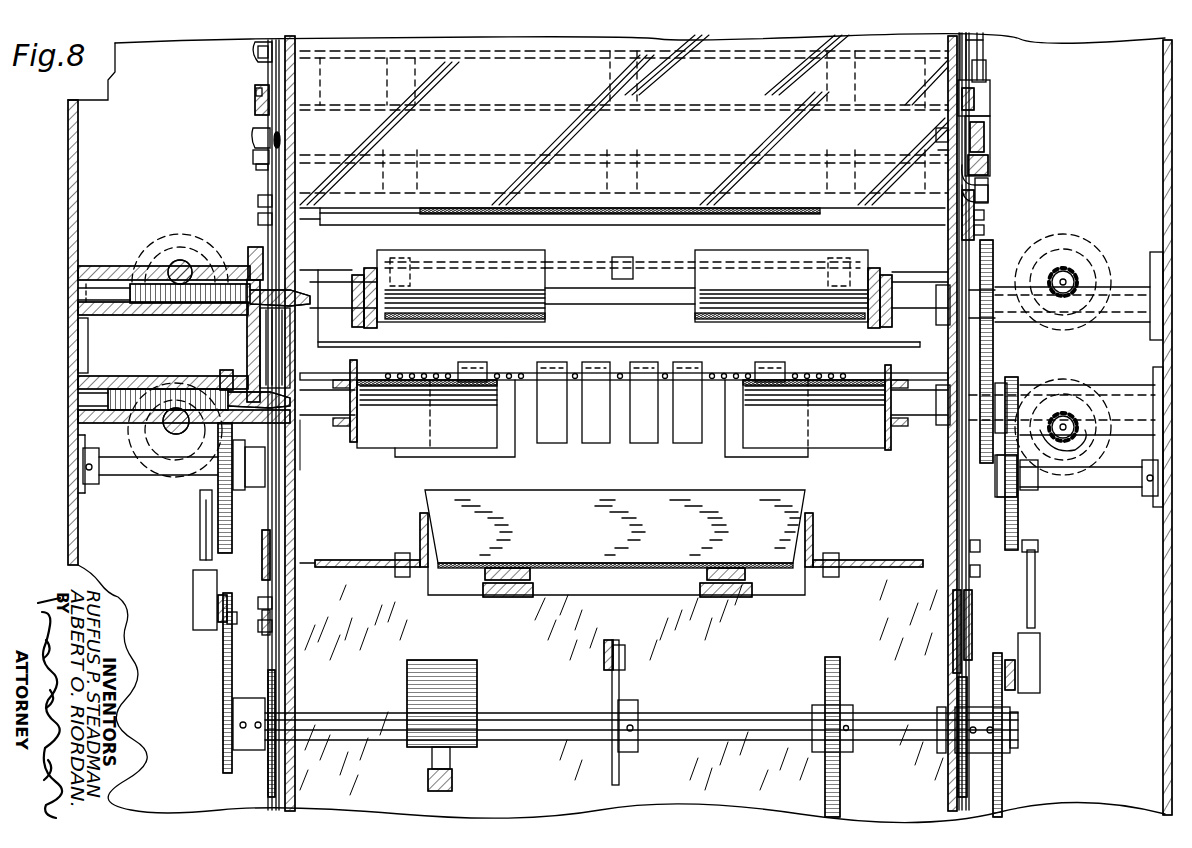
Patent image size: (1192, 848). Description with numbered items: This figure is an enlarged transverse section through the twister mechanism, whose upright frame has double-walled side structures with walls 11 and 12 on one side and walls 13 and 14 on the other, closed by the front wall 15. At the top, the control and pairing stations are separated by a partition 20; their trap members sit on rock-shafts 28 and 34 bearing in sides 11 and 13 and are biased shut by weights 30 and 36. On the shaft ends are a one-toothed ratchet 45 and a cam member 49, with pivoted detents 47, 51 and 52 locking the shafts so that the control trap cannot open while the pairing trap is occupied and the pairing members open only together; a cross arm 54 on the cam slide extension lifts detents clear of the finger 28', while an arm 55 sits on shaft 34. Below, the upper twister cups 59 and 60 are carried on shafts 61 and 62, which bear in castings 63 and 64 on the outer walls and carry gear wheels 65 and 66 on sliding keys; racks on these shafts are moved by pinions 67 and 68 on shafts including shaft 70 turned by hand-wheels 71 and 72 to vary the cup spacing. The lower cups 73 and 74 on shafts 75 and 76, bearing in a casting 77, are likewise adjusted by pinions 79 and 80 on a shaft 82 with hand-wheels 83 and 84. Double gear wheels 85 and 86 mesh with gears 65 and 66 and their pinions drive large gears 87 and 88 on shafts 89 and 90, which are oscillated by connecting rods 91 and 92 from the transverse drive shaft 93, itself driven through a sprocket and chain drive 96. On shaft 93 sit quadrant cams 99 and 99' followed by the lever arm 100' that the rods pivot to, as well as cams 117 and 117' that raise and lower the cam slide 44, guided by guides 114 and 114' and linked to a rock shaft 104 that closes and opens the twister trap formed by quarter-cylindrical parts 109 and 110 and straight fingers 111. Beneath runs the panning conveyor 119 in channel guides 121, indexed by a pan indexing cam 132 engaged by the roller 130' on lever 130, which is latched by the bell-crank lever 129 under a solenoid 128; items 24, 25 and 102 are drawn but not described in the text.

The side wall 11 is at (936, 133).
The side wall 12 is at (1163, 127).
The side wall 13 is at (295, 128).
The side wall 14 is at (78, 152).
The front wall 15 is at (268, 62).
The partition 20 is at (340, 220).
The bracket plate 24 is at (966, 52).
The bracket 25 is at (990, 92).
The rock-shaft 28 is at (624, 80).
The finger 28' is at (216, 95).
The weight 30 is at (255, 45).
The rock-shaft 34 is at (565, 150).
The weight 36 is at (253, 158).
The cam slide 44 is at (948, 198).
The one-toothed ratchet 45 is at (983, 38).
The detent 47 is at (986, 78).
The cam member 49 is at (938, 150).
The detent 51 is at (990, 120).
The detent 52 is at (988, 182).
The cross arm 54 is at (255, 128).
The arm 55 is at (256, 170).
The cup 59 is at (545, 298).
The cup 60 is at (695, 298).
The shaft 61 is at (335, 308).
The shaft 62 is at (905, 308).
The casting 63 is at (108, 318).
The casting 64 is at (1130, 320).
The gear wheel 65 is at (248, 242).
The gear wheel 66 is at (984, 232).
The pinion 67 is at (181, 262).
The pinion 68 is at (1078, 258).
The shaft 70 is at (1070, 275).
The hand-wheel 71 is at (150, 245).
The hand-wheel 72 is at (1085, 240).
The cup 73 is at (400, 452).
The cup 74 is at (845, 440).
The shaft 75 is at (318, 418).
The shaft 76 is at (920, 418).
The casting 77 is at (130, 388).
The pinion 79 is at (168, 432).
The pinion 80 is at (1072, 467).
The shaft 82 is at (1063, 420).
The hand-wheel 83 is at (180, 385).
The hand-wheel 84 is at (1020, 375).
The gear wheel 85 is at (232, 368).
The gear wheel 86 is at (993, 355).
The large gear 87 is at (232, 515).
The large gear 88 is at (1005, 500).
The shaft 89 is at (168, 477).
The shaft 90 is at (1115, 490).
The connecting rod 91 is at (200, 543).
The connecting rod 92 is at (1035, 585).
The transverse drive shaft 93 is at (730, 712).
The sprocket and chain drive 96 is at (840, 678).
The cam 99 is at (1022, 735).
The cam 99' is at (203, 683).
The lever arm 100' is at (192, 618).
The frame bar 102 is at (420, 348).
The rock shaft 104 is at (612, 255).
The quarter-cylindrical part 109 is at (460, 460).
The quarter-cylindrical part 110 is at (765, 460).
The straight fingers 111 is at (560, 445).
The guide 114 is at (994, 215).
The guide 114' is at (220, 142).
The cam 117 is at (950, 737).
The cam 117' is at (291, 733).
The panning conveyor 119 is at (510, 598).
The channel guide 121 is at (480, 575).
The solenoid 128 is at (477, 700).
The bell-crank lever 129 is at (452, 782).
The lever 130 is at (582, 655).
The roller 130' is at (652, 651).
The pan indexing cam 132 is at (619, 685).